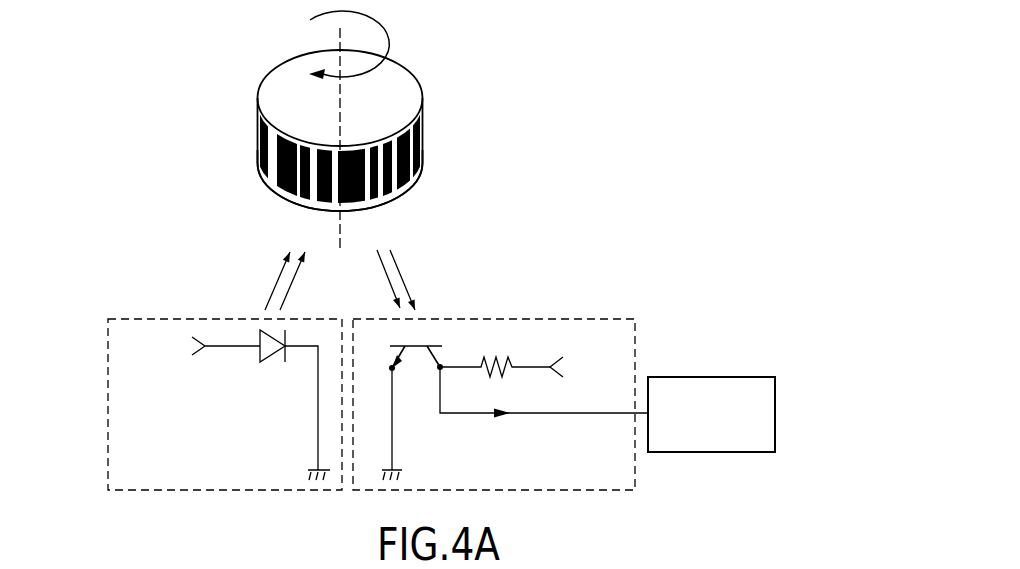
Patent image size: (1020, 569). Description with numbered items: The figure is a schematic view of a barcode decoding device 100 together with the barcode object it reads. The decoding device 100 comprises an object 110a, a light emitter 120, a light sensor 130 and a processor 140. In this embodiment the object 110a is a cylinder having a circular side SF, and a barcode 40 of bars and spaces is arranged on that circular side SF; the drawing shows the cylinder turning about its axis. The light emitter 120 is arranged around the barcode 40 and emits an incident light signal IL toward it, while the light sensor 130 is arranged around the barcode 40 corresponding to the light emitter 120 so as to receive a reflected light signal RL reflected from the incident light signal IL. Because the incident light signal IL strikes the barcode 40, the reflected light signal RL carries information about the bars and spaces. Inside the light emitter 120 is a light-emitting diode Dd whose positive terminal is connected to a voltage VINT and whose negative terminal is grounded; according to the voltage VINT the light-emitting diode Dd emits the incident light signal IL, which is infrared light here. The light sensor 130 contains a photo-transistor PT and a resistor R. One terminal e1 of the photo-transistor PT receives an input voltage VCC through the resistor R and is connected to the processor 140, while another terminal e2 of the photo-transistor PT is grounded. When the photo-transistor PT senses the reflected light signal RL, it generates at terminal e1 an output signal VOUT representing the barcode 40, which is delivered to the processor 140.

The decoding device 100 is at (83, 37).
The object 110a is at (402, 90).
The barcode 40 is at (423, 137).
The circular side SF is at (407, 183).
The incident light signal IL is at (276, 281).
The reflected light signal RL is at (411, 280).
The light emitter 120 is at (186, 406).
The light sensor 130 is at (534, 406).
The processor 140 is at (776, 413).
The voltage VINT is at (191, 346).
The light-emitting diode Dd is at (292, 405).
The photo-transistor PT is at (419, 413).
The terminal e1 is at (457, 382).
The terminal e2 is at (381, 422).
The resistor R is at (514, 353).
The input voltage VCC is at (586, 368).
The output signal VOUT is at (544, 410).